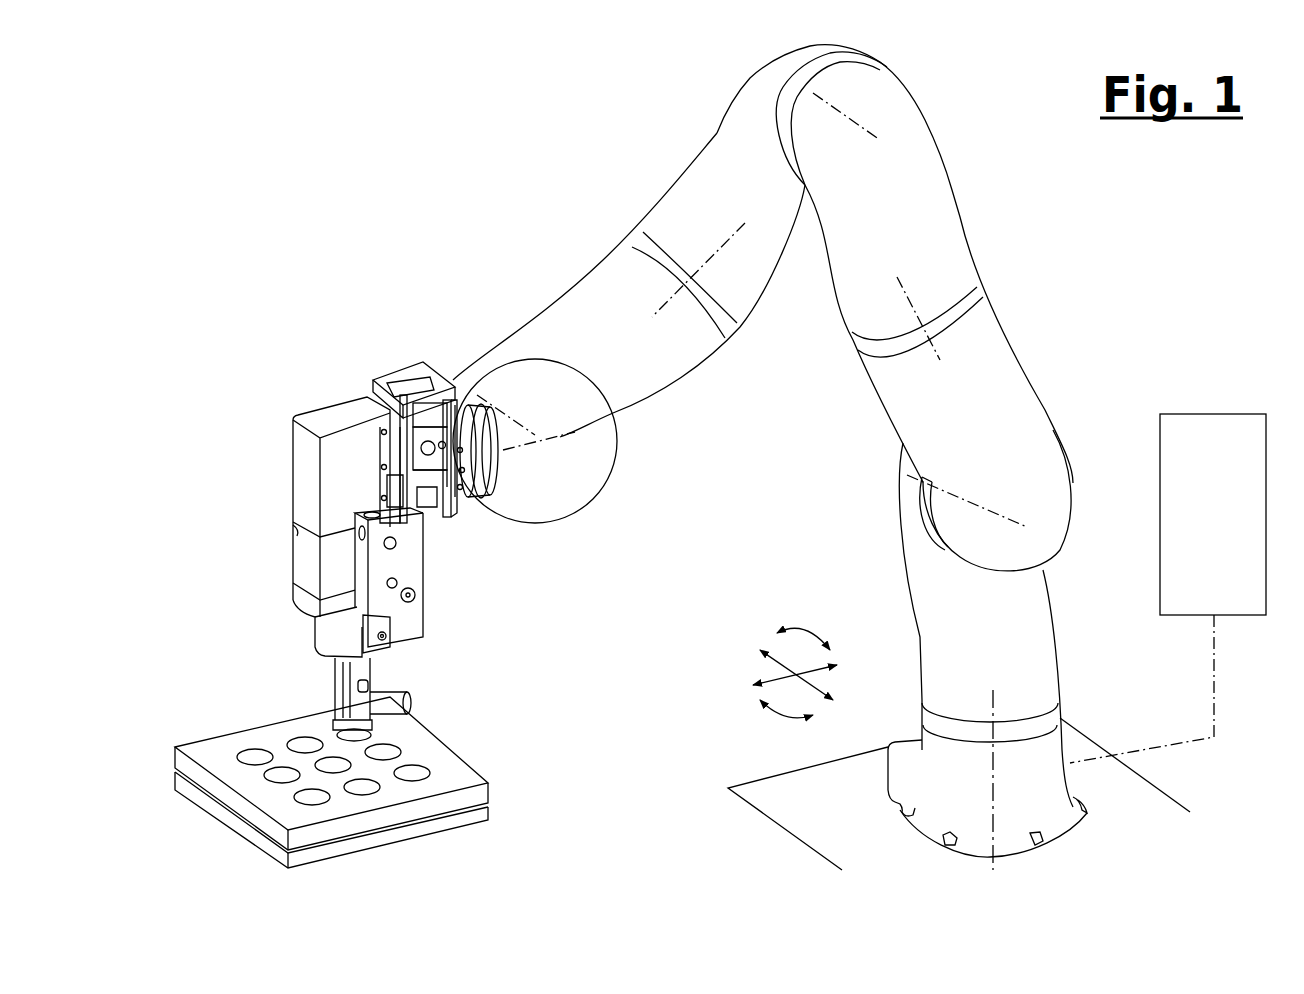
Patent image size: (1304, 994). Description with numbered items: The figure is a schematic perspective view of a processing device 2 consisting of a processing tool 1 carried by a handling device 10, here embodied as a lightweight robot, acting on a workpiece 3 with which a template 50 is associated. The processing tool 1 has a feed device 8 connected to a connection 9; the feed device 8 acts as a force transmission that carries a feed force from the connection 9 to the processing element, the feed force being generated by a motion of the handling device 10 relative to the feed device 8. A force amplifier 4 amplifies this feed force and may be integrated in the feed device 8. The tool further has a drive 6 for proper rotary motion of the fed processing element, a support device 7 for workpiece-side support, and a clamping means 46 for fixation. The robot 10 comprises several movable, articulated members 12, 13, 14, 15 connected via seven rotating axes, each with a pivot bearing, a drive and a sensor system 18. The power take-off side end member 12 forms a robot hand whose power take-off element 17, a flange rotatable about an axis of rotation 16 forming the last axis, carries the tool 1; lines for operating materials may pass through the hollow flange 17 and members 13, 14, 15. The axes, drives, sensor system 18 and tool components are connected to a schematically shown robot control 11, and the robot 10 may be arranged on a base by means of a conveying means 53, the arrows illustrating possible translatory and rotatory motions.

The processing tool 1 is at (287, 470).
The processing device 2 is at (1097, 353).
The workpiece 3 is at (408, 828).
The force amplifier 4 is at (412, 575).
The drive 6 is at (297, 527).
The feed device 8 is at (342, 567).
The support device 7 is at (309, 698).
The clamping means 46 is at (333, 690).
The connection 9 is at (449, 473).
The power take-off element 17 is at (463, 493).
The handling device 10 is at (717, 133).
The control 11 is at (1229, 448).
The end member 12 is at (570, 502).
The member 13 is at (635, 287).
The member 14 is at (982, 358).
The member 15 is at (1010, 623).
The axis of rotation 16 is at (572, 432).
The sensor system 18 is at (918, 370).
The template 50 is at (227, 745).
The conveying means 53 is at (808, 818).